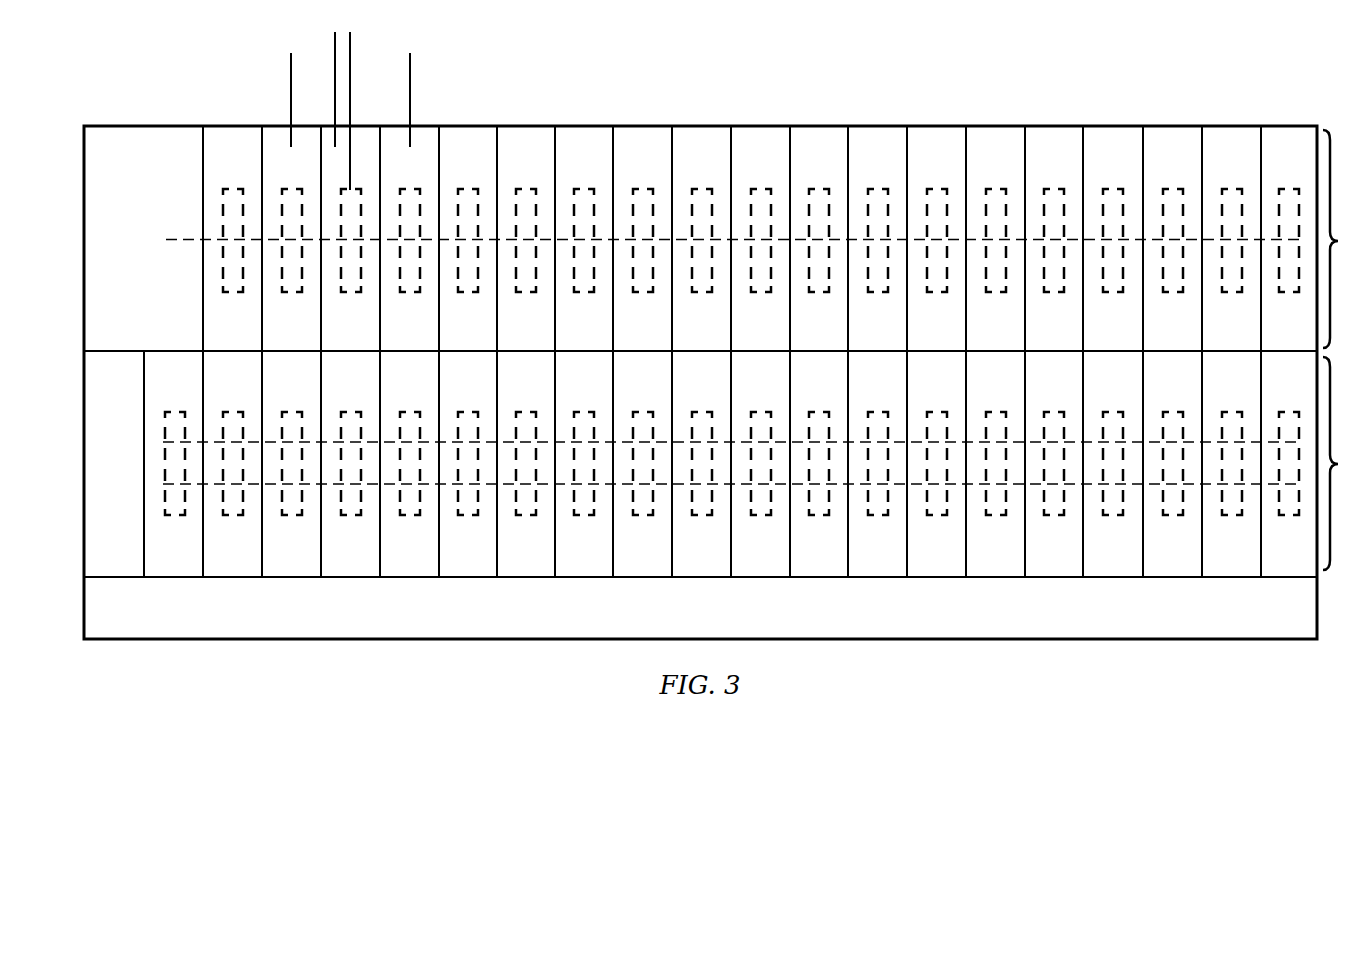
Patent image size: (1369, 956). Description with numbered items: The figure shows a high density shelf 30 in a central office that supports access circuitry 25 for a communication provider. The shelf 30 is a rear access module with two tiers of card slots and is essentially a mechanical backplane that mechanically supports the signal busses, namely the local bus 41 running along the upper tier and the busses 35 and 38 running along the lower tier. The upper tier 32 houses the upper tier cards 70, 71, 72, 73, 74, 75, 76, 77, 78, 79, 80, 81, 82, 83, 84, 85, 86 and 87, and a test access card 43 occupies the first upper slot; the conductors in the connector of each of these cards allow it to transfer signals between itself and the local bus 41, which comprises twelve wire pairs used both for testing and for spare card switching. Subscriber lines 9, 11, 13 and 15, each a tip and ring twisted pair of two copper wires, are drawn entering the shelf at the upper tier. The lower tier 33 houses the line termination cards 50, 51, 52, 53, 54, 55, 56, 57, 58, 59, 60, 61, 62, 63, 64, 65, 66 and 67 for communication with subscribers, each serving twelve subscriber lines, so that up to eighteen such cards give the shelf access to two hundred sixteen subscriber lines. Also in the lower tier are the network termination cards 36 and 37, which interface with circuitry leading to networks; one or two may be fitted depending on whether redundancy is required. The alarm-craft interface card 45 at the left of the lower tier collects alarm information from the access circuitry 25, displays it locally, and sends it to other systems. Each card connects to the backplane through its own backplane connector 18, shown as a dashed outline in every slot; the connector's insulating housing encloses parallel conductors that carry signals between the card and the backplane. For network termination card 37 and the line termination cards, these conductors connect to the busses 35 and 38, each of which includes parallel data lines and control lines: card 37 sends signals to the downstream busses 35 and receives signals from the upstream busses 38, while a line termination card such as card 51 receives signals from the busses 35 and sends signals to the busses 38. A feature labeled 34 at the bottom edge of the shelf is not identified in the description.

The subscriber line 9 is at (291, 59).
The subscriber line 11 is at (335, 48).
The subscriber line 13 is at (350, 49).
The subscriber line 15 is at (410, 63).
The backplane connector 18 is at (228, 292).
The access circuitry 25 is at (143, 134).
The high density shelf 30 is at (548, 646).
The upper tier 32 is at (1344, 239).
The lower tier 33 is at (1344, 463).
The panel base strip 34 is at (1031, 634).
The bus 35 is at (170, 436).
The network termination card 36 is at (175, 571).
The network termination card 37 is at (232, 571).
The bus 38 is at (170, 490).
The local bus 41 is at (177, 236).
The test access card 43 is at (228, 134).
The alarm-craft interface card 45 is at (117, 571).
The line termination card 50 is at (290, 571).
The line termination card 51 is at (349, 571).
The line termination card 52 is at (409, 571).
The line termination card 53 is at (467, 571).
The line termination card 54 is at (525, 571).
The line termination card 55 is at (584, 571).
The line termination card 56 is at (643, 571).
The line termination card 57 is at (701, 571).
The line termination card 58 is at (760, 571).
The line termination card 59 is at (819, 571).
The line termination card 60 is at (877, 571).
The line termination card 61 is at (936, 571).
The line termination card 62 is at (995, 571).
The line termination card 63 is at (1054, 571).
The line termination card 64 is at (1113, 571).
The line termination card 65 is at (1172, 571).
The line termination card 66 is at (1231, 571).
The line termination card 67 is at (1289, 571).
The upper tier card 70 is at (277, 134).
The upper tier card 71 is at (367, 134).
The upper tier card 72 is at (423, 134).
The upper tier card 73 is at (470, 134).
The upper tier card 74 is at (530, 134).
The upper tier card 75 is at (587, 134).
The upper tier card 76 is at (646, 134).
The upper tier card 77 is at (704, 134).
The upper tier card 78 is at (763, 134).
The upper tier card 79 is at (822, 134).
The upper tier card 80 is at (880, 134).
The upper tier card 81 is at (938, 134).
The upper tier card 82 is at (998, 134).
The upper tier card 83 is at (1058, 134).
The upper tier card 84 is at (1115, 134).
The upper tier card 85 is at (1175, 134).
The upper tier card 86 is at (1235, 134).
The upper tier card 87 is at (1294, 134).